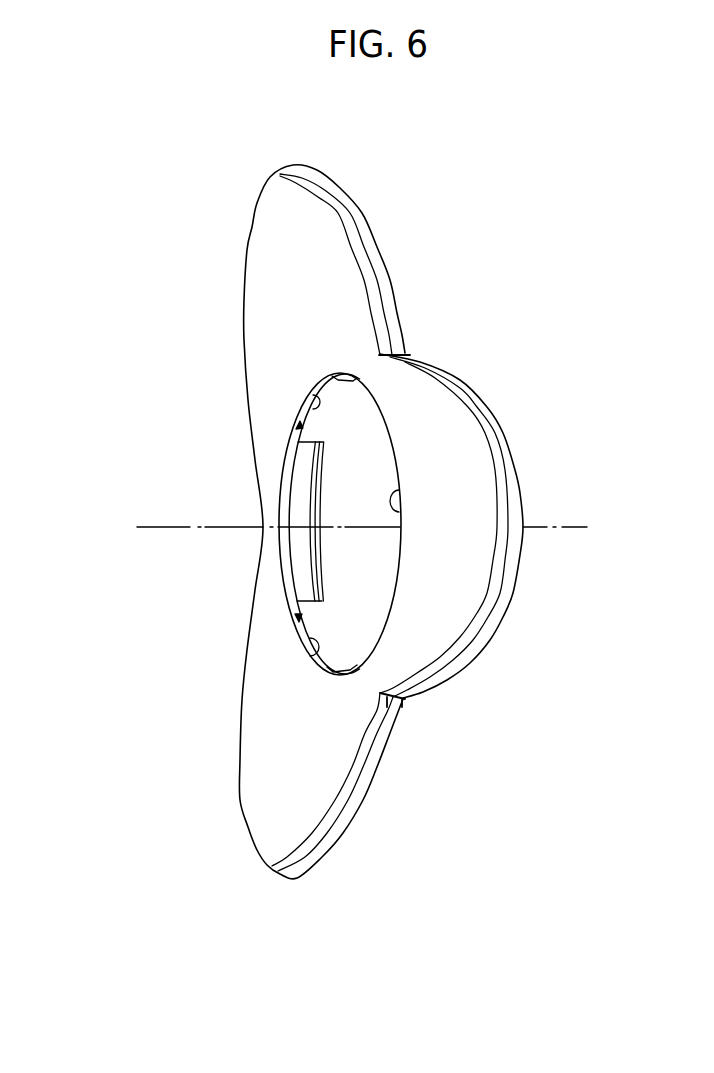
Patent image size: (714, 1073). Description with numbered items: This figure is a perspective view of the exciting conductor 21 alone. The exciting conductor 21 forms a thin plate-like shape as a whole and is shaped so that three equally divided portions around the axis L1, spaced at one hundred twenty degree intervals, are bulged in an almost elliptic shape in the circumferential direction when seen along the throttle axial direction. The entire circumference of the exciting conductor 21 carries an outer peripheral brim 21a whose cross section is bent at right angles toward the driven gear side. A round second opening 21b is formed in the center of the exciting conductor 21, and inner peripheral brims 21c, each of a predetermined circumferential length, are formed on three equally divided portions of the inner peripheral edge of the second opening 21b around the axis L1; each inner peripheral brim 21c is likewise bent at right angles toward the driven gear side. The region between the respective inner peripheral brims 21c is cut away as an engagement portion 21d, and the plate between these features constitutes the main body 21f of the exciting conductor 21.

The exciting conductor 21 is at (135, 389).
The outer peripheral brim 21a is at (360, 249).
The second opening 21b is at (292, 505).
The inner peripheral brim 21c is at (305, 463).
The engagement portion 21d is at (310, 402).
The main body 21f is at (462, 585).
The axis L1 is at (153, 530).